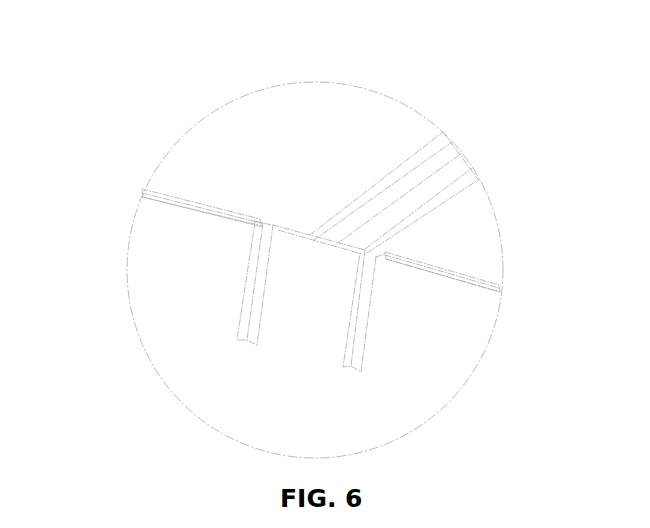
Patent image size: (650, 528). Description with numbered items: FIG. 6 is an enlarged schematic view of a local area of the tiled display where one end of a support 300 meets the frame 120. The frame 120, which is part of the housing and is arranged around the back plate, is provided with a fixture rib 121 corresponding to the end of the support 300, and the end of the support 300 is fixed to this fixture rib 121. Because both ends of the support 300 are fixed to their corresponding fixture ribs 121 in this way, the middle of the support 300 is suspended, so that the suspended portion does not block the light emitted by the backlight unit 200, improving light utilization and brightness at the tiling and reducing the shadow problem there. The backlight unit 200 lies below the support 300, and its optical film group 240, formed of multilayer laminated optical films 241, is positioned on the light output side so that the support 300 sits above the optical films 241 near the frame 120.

The frame 120 is at (148, 310).
The fixture rib 121 is at (287, 273).
The backlight unit 200 is at (193, 140).
The optical film group 240 is at (247, 110).
The optical film 241 is at (317, 105).
The support 300 is at (450, 153).